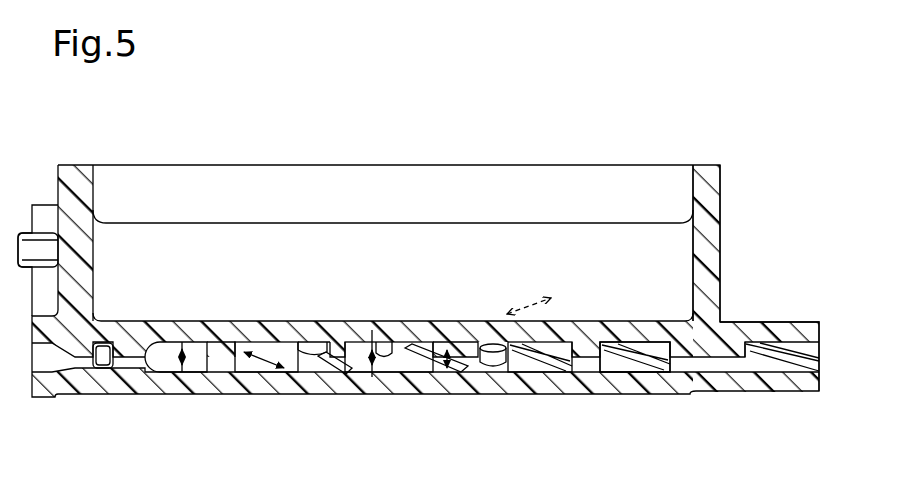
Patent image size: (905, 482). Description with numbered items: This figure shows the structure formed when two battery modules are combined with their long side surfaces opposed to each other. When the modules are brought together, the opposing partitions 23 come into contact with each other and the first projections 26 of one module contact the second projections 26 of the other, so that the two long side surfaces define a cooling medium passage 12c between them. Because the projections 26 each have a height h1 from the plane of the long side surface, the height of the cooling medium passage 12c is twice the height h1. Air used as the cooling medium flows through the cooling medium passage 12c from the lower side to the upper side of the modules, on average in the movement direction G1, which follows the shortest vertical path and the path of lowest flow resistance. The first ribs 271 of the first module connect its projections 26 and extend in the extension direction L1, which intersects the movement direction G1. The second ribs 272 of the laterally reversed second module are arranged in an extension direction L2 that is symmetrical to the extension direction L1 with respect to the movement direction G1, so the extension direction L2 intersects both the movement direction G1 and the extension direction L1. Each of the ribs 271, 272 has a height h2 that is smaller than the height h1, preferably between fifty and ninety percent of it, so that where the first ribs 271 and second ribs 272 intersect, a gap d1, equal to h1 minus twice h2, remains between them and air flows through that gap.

The projections 26 is at (230, 344).
The first ribs 271 is at (350, 375).
The second ribs 272 is at (345, 348).
The partitions 23 is at (715, 326).
The cooling medium passage 12c is at (612, 353).
The height of projections h1 is at (184, 346).
The height of ribs h2 is at (373, 342).
The gap d1 is at (395, 345).
The extension direction L1 is at (266, 371).
The extension direction L2 is at (527, 303).
The movement direction G1 is at (435, 377).